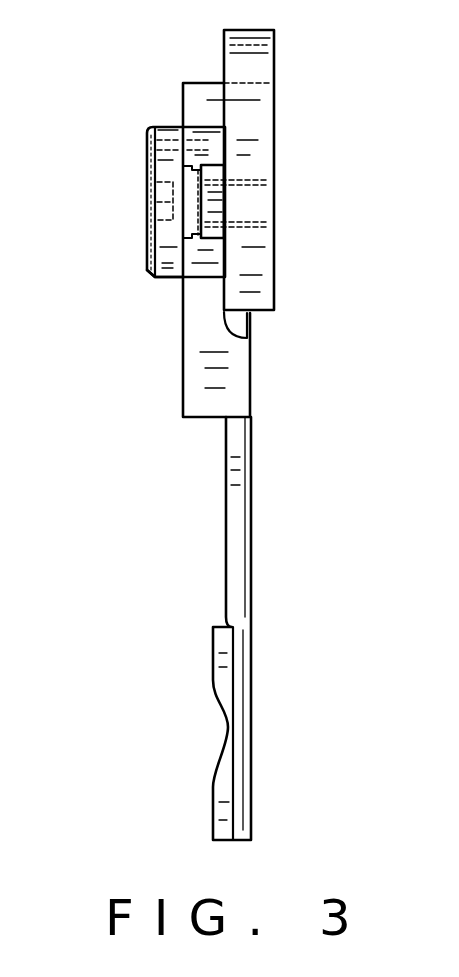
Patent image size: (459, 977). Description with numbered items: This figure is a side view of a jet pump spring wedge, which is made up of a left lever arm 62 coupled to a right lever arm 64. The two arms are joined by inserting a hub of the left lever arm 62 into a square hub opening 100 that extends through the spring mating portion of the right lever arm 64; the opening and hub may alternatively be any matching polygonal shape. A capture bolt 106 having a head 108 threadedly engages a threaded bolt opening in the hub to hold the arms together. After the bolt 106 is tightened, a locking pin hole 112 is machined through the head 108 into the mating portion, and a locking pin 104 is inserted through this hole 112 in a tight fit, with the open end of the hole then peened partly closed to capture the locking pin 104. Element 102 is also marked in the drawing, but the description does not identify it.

The left lever arm 62 is at (274, 290).
The right lever arm 64 is at (183, 405).
The square hub opening 100 is at (262, 175).
The upper shelf portion 102 is at (192, 133).
The locking pin 104 is at (151, 145).
The capture bolt 106 is at (163, 235).
The head 108 is at (167, 280).
The locking pin hole 112 is at (167, 135).